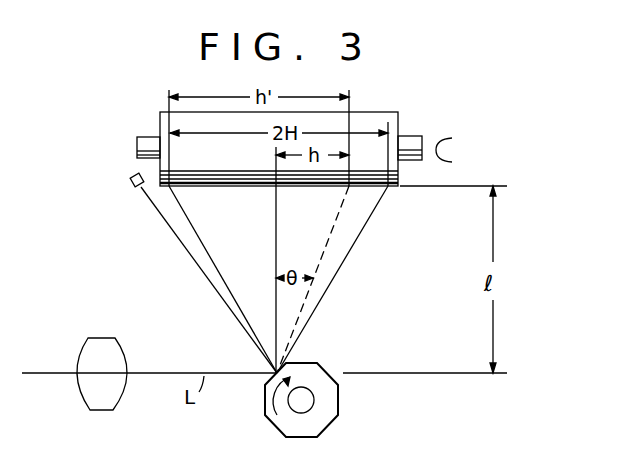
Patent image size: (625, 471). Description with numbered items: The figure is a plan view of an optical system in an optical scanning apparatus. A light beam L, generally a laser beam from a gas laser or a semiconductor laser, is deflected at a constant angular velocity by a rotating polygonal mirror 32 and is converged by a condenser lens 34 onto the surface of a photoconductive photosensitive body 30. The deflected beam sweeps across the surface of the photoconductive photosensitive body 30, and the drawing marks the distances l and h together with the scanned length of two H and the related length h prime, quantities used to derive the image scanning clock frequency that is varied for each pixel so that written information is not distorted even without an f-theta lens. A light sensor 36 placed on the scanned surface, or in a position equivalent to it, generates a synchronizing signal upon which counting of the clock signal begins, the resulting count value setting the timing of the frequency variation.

The photoconductive photosensitive body 30 is at (392, 121).
The rotating polygonal mirror 32 is at (340, 394).
The condenser lens 34 is at (113, 403).
The light sensor 36 is at (131, 186).